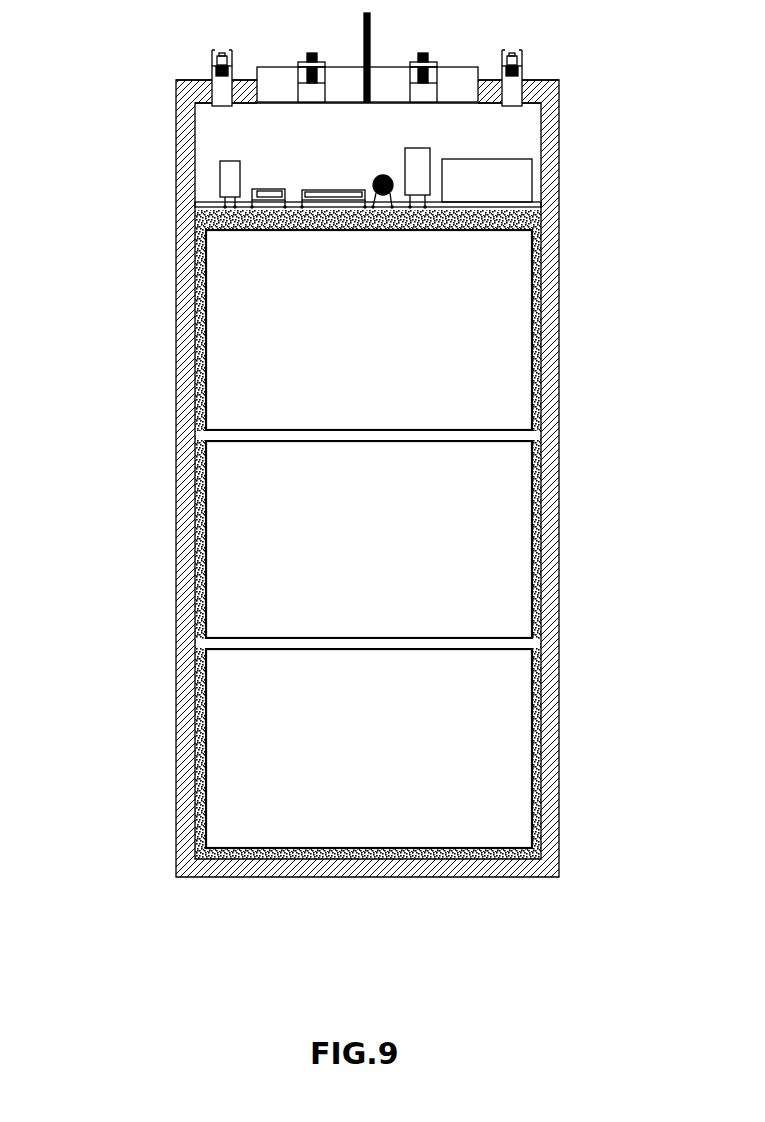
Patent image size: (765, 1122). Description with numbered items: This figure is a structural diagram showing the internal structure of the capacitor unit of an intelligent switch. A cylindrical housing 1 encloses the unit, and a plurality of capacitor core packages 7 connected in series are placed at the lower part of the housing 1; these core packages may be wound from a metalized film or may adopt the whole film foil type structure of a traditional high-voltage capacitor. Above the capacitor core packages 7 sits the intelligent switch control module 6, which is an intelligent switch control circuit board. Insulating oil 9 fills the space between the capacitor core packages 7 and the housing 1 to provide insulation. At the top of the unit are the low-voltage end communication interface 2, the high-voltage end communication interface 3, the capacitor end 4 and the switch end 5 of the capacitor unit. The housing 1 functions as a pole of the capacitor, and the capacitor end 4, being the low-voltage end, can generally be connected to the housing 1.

The housing 1 is at (550, 285).
The low-voltage end communication interface 2 is at (213, 70).
The high-voltage end communication interface 3 is at (520, 70).
The capacitor end of capacitor unit of intelligent switch 4 is at (310, 55).
The switch end of capacitor unit of intelligent switch 5 is at (422, 55).
The control module of intelligent switch 6 is at (217, 197).
The capacitor core package 7 is at (485, 710).
The insulating oil 9 is at (205, 373).